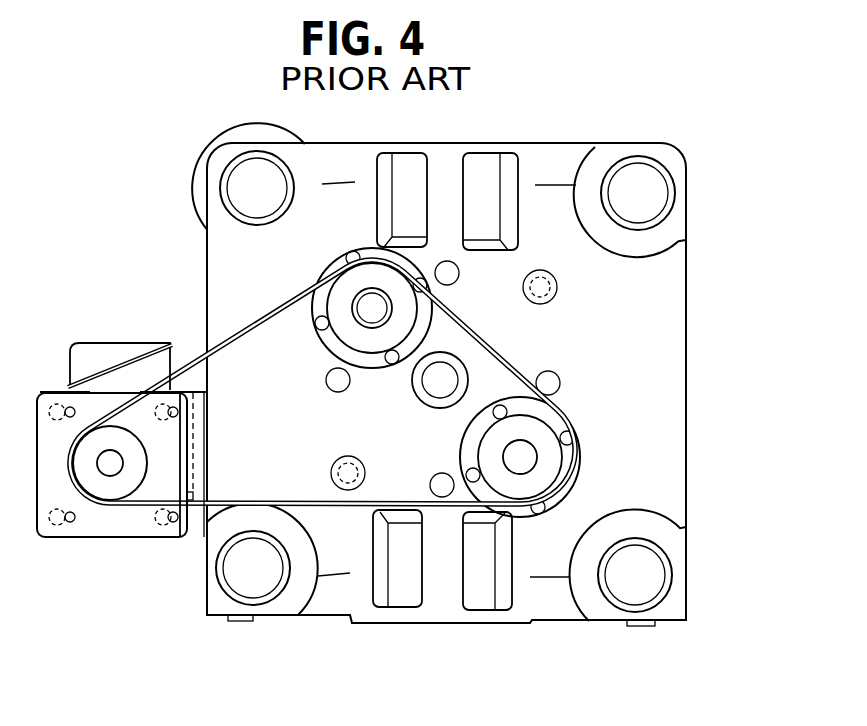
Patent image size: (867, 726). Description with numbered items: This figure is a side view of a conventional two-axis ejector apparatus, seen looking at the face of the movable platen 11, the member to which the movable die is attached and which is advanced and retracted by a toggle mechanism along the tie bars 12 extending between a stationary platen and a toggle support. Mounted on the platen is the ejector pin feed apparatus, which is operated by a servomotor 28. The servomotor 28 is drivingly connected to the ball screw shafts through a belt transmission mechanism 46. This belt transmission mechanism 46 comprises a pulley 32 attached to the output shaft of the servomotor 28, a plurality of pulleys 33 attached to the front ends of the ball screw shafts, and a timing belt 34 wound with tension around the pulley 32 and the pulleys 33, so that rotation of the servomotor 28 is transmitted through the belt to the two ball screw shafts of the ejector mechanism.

The movable platen 11 is at (207, 265).
The tie bars 12 is at (653, 181).
The servomotor 28 is at (133, 537).
The pulley 32 is at (97, 483).
The pulleys 33 is at (393, 283).
The timing belt 34 is at (352, 507).
The belt transmission mechanism 46 is at (520, 340).